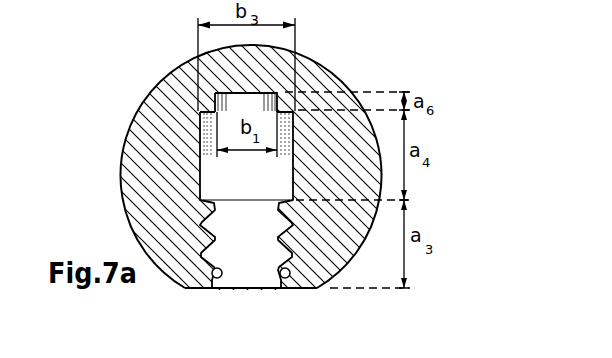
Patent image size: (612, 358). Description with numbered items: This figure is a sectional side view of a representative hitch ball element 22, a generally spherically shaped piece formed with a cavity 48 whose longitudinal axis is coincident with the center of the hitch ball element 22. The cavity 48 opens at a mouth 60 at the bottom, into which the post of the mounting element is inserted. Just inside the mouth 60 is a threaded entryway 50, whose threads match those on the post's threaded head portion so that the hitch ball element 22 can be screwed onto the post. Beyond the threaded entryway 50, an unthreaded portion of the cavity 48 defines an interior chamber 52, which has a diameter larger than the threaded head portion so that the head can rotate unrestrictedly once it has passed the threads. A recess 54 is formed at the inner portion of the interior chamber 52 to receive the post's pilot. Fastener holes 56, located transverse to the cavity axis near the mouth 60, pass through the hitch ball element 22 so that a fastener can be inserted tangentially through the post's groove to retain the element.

The hitch ball element 22 is at (159, 84).
The cavity 48 is at (191, 166).
The interior chamber 52 is at (259, 187).
The recess 54 is at (268, 90).
The fastener holes 56 is at (221, 278).
The mouth 60 is at (217, 298).
The threaded entryway 50 is at (320, 289).